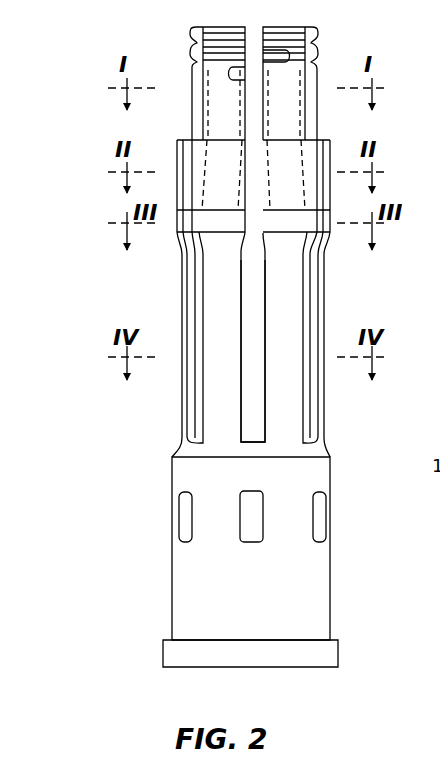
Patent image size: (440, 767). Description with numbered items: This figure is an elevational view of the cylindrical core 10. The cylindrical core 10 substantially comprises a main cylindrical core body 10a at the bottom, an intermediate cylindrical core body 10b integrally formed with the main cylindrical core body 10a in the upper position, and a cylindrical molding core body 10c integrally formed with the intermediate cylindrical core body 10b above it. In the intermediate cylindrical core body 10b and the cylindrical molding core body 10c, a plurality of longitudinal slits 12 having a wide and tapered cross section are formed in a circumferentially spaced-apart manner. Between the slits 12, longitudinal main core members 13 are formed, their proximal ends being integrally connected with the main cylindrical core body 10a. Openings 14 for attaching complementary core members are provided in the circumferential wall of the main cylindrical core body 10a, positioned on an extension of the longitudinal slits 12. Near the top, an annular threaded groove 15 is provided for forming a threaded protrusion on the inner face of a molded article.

The cylindrical core 10 is at (84, 372).
The main cylindrical core body 10a is at (104, 457).
The intermediate cylindrical core body 10b is at (104, 141).
The cylindrical molding core body 10c is at (104, 32).
The longitudinal slits 12 is at (253, 270).
The longitudinal main core members 13 is at (224, 329).
The openings 14 is at (250, 526).
The annular threaded groove 15 is at (316, 42).